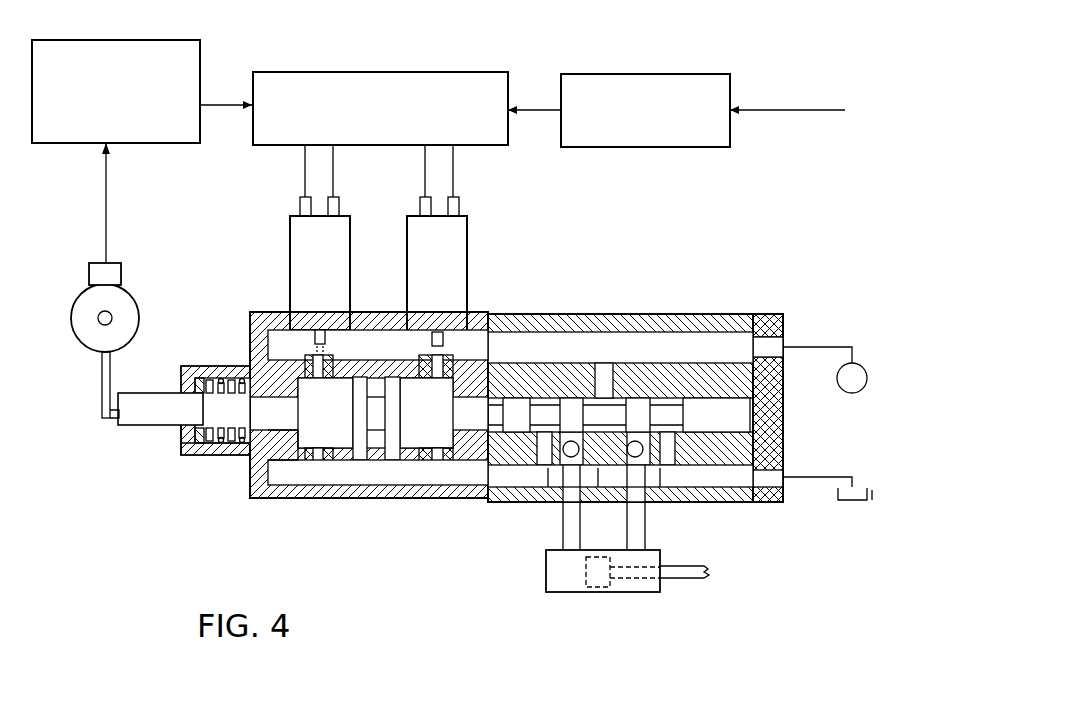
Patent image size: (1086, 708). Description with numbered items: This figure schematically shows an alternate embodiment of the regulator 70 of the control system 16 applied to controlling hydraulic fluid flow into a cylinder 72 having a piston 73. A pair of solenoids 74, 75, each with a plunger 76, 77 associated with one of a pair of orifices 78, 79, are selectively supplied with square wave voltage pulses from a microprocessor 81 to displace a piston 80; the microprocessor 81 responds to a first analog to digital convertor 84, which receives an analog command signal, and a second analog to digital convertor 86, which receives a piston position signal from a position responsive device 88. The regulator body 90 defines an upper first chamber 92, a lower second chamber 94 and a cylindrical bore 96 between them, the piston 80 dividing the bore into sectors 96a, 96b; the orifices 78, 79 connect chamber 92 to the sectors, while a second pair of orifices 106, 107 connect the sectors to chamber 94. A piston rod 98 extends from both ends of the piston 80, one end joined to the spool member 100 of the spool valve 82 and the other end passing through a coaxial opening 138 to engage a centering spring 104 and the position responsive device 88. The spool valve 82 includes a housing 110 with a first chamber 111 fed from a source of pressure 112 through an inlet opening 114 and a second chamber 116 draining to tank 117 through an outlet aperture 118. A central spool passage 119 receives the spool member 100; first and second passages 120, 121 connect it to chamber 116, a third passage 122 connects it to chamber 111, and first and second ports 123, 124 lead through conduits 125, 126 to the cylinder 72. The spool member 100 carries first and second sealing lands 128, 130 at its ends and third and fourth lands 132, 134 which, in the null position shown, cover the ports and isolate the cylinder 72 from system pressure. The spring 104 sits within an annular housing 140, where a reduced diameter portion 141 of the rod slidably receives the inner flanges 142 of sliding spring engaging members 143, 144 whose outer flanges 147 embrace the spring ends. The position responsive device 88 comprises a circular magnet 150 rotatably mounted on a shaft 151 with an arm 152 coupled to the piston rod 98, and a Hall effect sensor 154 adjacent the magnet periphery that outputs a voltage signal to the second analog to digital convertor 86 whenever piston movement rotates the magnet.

The control system 16 is at (338, 28).
The regulator 70 is at (348, 504).
The cylinder 72 is at (618, 592).
The piston 73 is at (590, 592).
The solenoid 74 is at (350, 248).
The solenoid 75 is at (467, 250).
The plunger 76 is at (314, 336).
The plunger 77 is at (446, 332).
The orifice 78 is at (328, 338).
The orifice 79 is at (432, 342).
The piston 80 is at (393, 458).
The microprocessor 81 is at (370, 72).
The spool valve 82 is at (535, 310).
The first analog to digital convertor 84 is at (663, 74).
The second analog to digital convertor 86 is at (138, 40).
The position responsive device 88 is at (62, 309).
The body 90 is at (365, 470).
The first chamber 92 is at (365, 353).
The second chamber 94 is at (389, 480).
The cylindrical bore 96 is at (329, 386).
The bore sector 96a is at (316, 388).
The bore sector 96b is at (420, 386).
The piston rod 98 is at (275, 422).
The spool member 100 is at (578, 372).
The centering spring 104 is at (222, 383).
The orifice 106 is at (319, 482).
The orifice 107 is at (461, 500).
The housing 110 is at (648, 314).
The first chamber 111 is at (668, 356).
The source of pressure 112 is at (868, 378).
The inlet opening 114 is at (783, 316).
The second chamber 116 is at (523, 503).
The tank 117 is at (872, 495).
The outlet aperture 118 is at (783, 503).
The spool passage 119 is at (742, 502).
The first passage 120 is at (733, 420).
The second passage 121 is at (546, 500).
The third passage 122 is at (603, 372).
The first port 123 is at (656, 500).
The second port 124 is at (598, 488).
The conduit 125 is at (660, 556).
The conduit 126 is at (563, 540).
The first sealing land 128 is at (709, 380).
The second sealing land 130 is at (518, 400).
The third cylindrical land 132 is at (672, 372).
The fourth cylindrical land 134 is at (575, 400).
The coaxial opening 138 is at (290, 465).
The annular housing 140 is at (188, 457).
The reduced diameter portion 141 is at (213, 457).
The inner flanges 142 is at (200, 425).
The sliding spring engaging member 143 is at (245, 372).
The sliding spring engaging member 144 is at (188, 366).
The outer flanges 147 is at (183, 448).
The circular magnet 150 is at (85, 344).
The shaft 151 is at (111, 312).
The arm 152 is at (102, 396).
The Hall effect sensor 154 is at (89, 270).